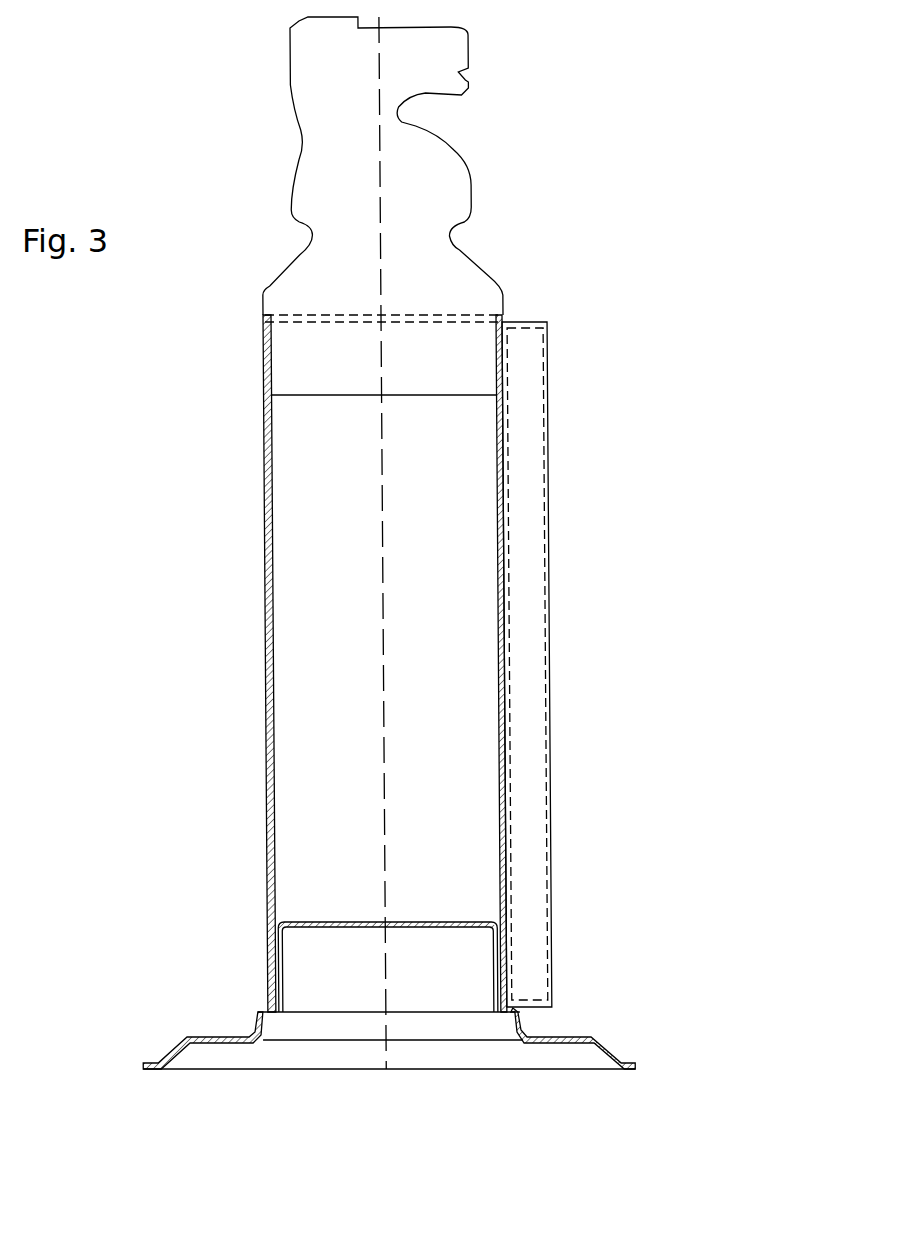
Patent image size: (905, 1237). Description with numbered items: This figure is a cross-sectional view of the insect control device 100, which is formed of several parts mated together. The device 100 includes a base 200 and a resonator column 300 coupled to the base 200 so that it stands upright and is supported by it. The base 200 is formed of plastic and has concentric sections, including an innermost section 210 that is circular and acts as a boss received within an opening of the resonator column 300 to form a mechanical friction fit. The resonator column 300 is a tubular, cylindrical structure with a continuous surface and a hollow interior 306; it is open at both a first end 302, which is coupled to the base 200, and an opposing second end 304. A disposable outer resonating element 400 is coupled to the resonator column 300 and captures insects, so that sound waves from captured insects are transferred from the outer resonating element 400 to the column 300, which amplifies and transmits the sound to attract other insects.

The insect control device 100 is at (597, 447).
The base 200 is at (598, 1017).
The innermost section 210 is at (357, 920).
The resonator column 300 is at (263, 605).
The first end 302 is at (500, 1010).
The second end 304 is at (500, 318).
The hollow interior 306 is at (353, 523).
The outer resonating element 400 is at (572, 560).